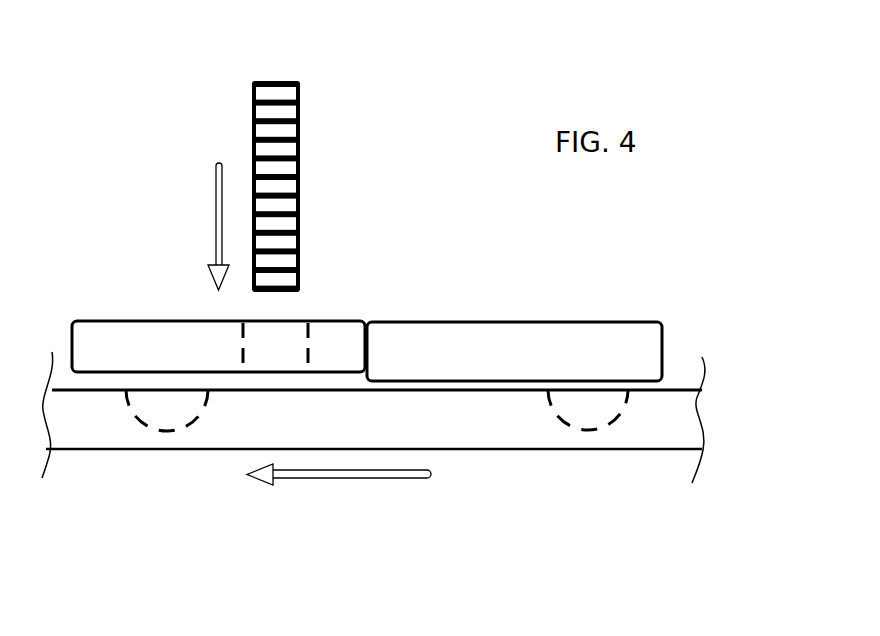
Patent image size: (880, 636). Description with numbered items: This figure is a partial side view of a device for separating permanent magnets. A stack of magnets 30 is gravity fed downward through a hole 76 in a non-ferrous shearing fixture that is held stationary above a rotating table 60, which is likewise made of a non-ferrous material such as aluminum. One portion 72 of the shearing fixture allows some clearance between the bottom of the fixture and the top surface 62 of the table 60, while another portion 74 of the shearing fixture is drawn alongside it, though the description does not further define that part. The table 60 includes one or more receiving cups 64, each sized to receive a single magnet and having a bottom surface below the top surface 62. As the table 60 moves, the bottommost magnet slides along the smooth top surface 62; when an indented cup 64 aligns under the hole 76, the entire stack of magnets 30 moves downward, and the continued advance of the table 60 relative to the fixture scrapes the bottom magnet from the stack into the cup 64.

The rotating table 60 is at (126, 98).
The stack of magnets 30 is at (292, 113).
The portion of the shearing fixture 72 is at (176, 335).
The hole 76 is at (283, 340).
The second plate 74 is at (632, 342).
The top surface of the rotating table 62 is at (505, 430).
The receiving cup 64 is at (173, 402).